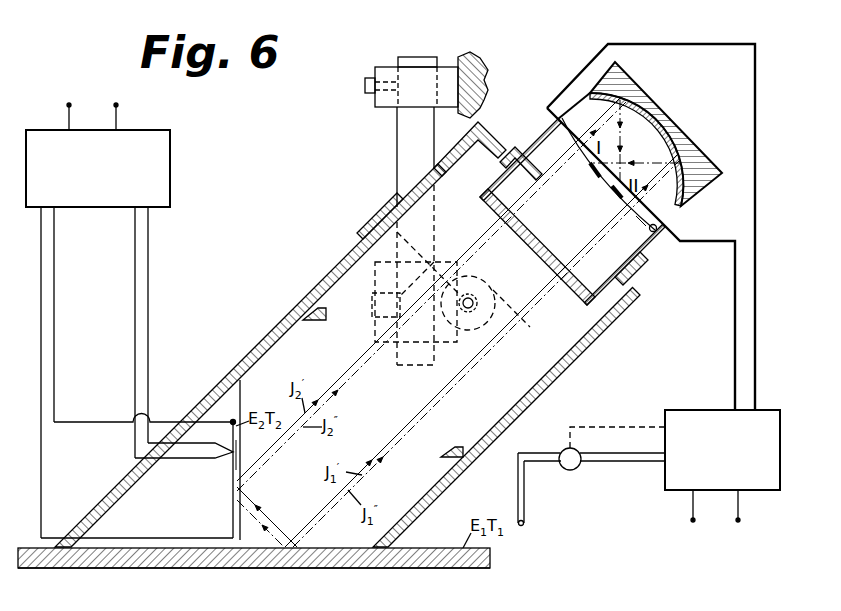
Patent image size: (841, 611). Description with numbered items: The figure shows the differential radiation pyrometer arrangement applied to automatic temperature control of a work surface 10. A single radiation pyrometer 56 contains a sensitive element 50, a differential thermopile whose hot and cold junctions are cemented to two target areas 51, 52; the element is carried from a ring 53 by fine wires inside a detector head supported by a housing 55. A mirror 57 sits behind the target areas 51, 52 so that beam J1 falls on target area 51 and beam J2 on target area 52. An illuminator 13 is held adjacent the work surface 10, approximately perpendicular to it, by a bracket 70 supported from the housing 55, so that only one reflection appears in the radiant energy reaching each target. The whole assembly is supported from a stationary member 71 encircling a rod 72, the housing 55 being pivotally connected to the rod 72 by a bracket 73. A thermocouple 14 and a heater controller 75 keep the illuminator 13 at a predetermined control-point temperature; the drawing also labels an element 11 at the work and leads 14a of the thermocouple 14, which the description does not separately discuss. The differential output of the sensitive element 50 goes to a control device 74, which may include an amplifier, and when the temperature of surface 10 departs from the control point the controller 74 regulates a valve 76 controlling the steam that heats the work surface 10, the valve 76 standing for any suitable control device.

The work surface 10 is at (430, 549).
The plate support 11 is at (447, 569).
The illuminator 13 is at (236, 447).
The thermocouple 14 is at (228, 460).
The heater leads 14a is at (133, 346).
The sensitive element 50 is at (640, 222).
The target area 51 is at (592, 172).
The target area 52 is at (618, 193).
The ring 53 is at (656, 232).
The housing 55 is at (350, 252).
The radiation pyrometer 56 is at (654, 344).
The mirror 57 is at (642, 104).
The bracket 70 is at (242, 398).
The stationary member 71 is at (374, 103).
The rod 72 is at (397, 143).
The bracket 73 is at (372, 288).
The control device 74 is at (665, 478).
The heater controller 75 is at (170, 175).
The valve 76 is at (569, 469).